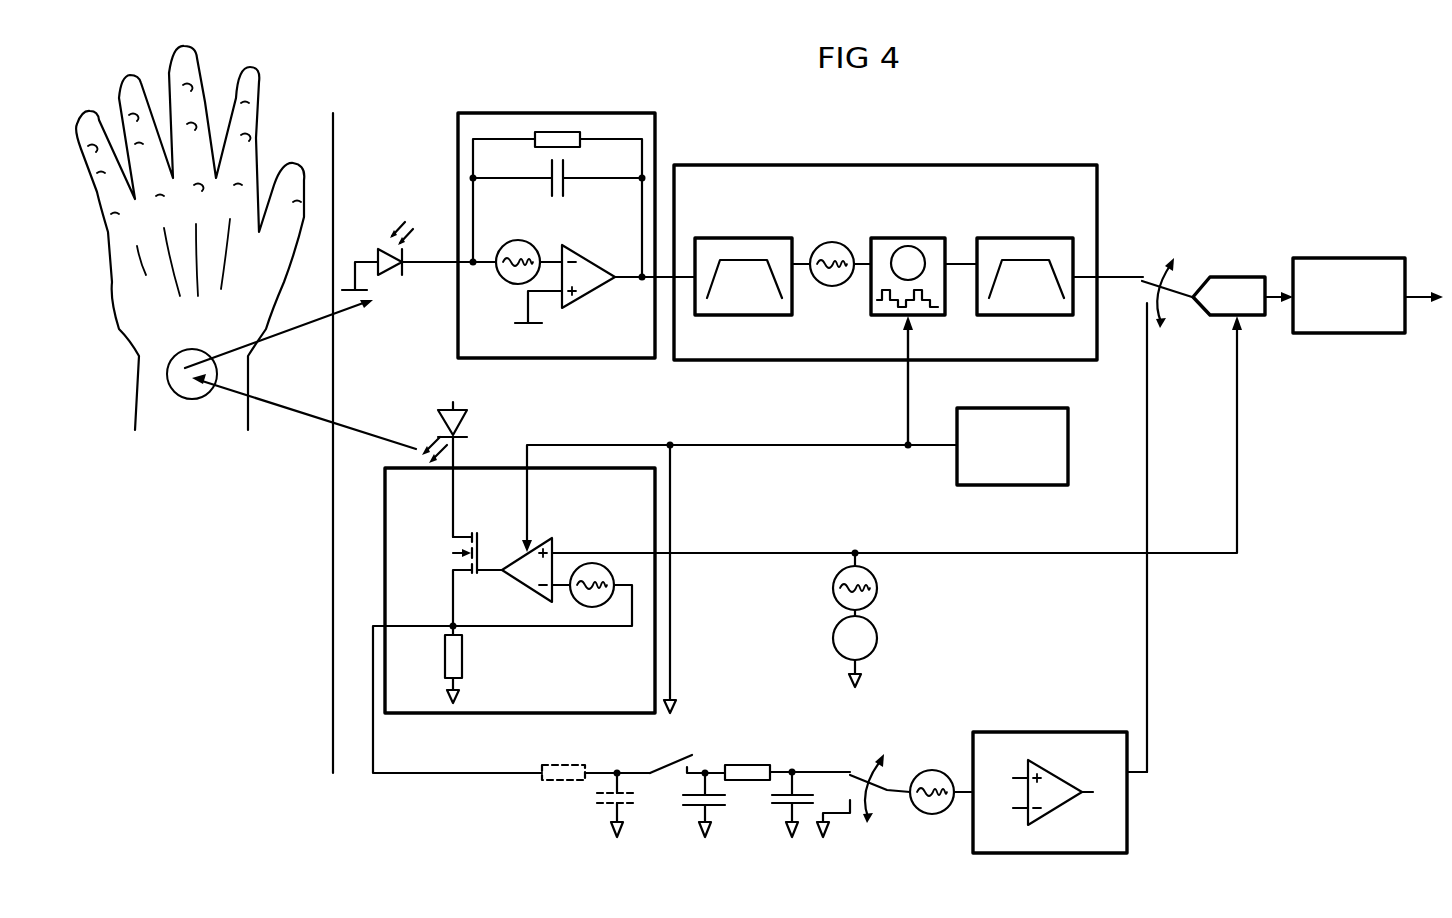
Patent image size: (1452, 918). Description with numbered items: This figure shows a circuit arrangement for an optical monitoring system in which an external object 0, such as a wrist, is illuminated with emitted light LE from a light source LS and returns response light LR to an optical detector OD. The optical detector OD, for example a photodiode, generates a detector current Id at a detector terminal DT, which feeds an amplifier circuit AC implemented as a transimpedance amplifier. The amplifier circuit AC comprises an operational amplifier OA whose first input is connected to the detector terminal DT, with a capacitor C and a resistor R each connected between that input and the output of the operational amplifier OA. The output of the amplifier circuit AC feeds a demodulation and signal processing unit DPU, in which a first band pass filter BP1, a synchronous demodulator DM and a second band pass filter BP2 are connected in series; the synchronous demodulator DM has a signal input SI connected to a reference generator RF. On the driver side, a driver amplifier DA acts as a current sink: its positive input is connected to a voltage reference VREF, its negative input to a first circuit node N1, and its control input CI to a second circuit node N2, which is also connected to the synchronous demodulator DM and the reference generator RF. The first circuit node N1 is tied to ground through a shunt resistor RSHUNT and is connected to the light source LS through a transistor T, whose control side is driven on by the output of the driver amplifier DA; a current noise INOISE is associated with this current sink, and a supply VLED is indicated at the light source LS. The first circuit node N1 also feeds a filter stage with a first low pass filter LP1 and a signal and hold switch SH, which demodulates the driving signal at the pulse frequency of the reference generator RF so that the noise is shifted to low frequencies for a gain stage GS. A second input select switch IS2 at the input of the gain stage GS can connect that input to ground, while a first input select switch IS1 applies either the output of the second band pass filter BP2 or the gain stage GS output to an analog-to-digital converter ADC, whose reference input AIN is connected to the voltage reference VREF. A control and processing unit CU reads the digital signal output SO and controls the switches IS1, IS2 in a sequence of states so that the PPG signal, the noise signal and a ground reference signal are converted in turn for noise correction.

The external object 0 is at (116, 334).
The response light LR is at (279, 334).
The emitted light LE is at (304, 412).
The optical detector OD is at (392, 274).
The detector terminal DT is at (448, 260).
The amplifier circuit AC is at (500, 113).
The resistor R is at (557, 132).
The capacitor C is at (567, 166).
The detector current Id is at (473, 266).
The operational amplifier OA is at (592, 296).
The demodulation and signal processing unit DPU is at (972, 165).
The first band pass filter BP1 is at (745, 238).
The synchronous demodulator DM is at (907, 238).
The second band pass filter BP2 is at (1025, 238).
The signal input SI is at (912, 342).
The first input select switch IS1 is at (1172, 290).
The analog-to-digital converter ADC is at (1243, 296).
The control and processing unit CU is at (1349, 295).
The signal output SO is at (1424, 279).
The reference input AIN is at (1243, 320).
The LED supply voltage VLED is at (453, 391).
The light source LS is at (470, 420).
The driver amplifier DA is at (627, 468).
The transistor T is at (463, 535).
The on control signal on is at (503, 520).
The control input CI is at (538, 546).
The current noise INOISE is at (548, 613).
The first circuit node N1 is at (448, 624).
The shunt resistor RSHUNT is at (499, 664).
The reference generator RF is at (1012, 446).
The second circuit node N2 is at (906, 450).
The voltage reference VREF is at (886, 648).
The first low pass filter LP1 is at (570, 782).
The signal and hold switch SH is at (748, 765).
The second input select switch IS2 is at (877, 788).
The gain stage GS is at (1050, 732).